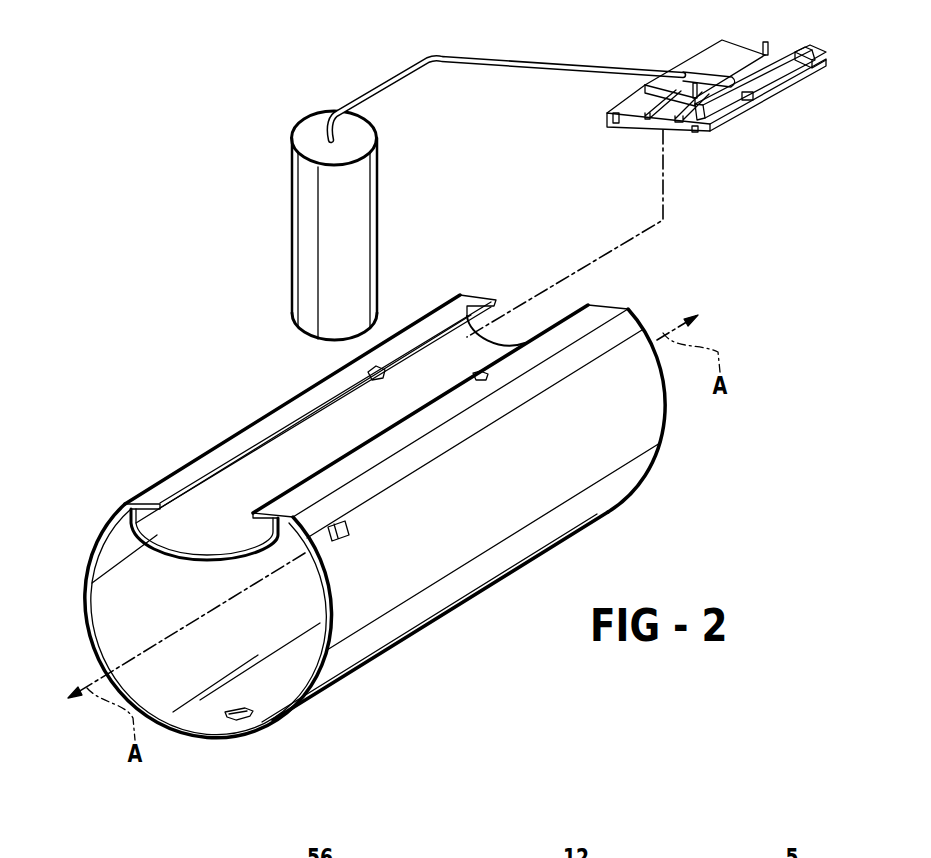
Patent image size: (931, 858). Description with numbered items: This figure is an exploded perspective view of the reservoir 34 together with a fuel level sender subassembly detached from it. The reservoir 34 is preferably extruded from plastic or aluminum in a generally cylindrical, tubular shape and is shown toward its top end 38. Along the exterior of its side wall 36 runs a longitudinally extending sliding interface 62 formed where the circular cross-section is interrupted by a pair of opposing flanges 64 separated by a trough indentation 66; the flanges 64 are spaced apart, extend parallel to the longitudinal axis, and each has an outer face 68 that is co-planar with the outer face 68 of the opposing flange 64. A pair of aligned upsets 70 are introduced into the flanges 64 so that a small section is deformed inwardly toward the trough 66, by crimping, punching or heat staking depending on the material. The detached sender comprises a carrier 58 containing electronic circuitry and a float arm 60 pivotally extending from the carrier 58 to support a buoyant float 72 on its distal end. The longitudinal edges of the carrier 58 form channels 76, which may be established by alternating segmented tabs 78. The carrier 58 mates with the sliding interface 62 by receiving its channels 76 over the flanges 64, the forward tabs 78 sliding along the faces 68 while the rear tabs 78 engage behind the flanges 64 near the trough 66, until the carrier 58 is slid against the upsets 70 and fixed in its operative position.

The reservoir 34 is at (430, 632).
The side wall 36 is at (637, 473).
The top end 38 is at (178, 732).
The carrier 58 is at (793, 43).
The float arm 60 is at (538, 63).
The sliding interface 62 is at (500, 294).
The flanges 64 is at (333, 468).
The trough indentation 66 is at (207, 531).
The outer face 68 is at (200, 468).
The upsets 70 is at (478, 376).
The float 72 is at (293, 240).
The channels 76 is at (747, 100).
The tabs 78 is at (682, 54).